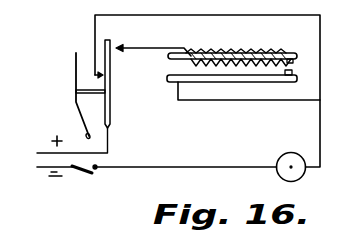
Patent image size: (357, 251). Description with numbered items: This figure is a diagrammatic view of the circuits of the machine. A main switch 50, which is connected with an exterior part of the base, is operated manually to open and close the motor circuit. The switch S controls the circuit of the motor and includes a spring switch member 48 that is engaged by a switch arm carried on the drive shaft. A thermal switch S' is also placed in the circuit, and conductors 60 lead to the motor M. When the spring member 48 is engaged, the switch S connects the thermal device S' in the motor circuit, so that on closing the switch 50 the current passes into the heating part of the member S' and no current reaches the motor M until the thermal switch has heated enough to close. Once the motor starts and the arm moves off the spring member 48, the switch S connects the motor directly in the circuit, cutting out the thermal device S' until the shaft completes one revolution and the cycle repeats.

The spring switch member 48 is at (72, 76).
The switch S is at (121, 84).
The thermal switch S' is at (232, 44).
The conductors for the motor 60 is at (110, 142).
The main switch 50 is at (82, 178).
The motor M is at (298, 144).